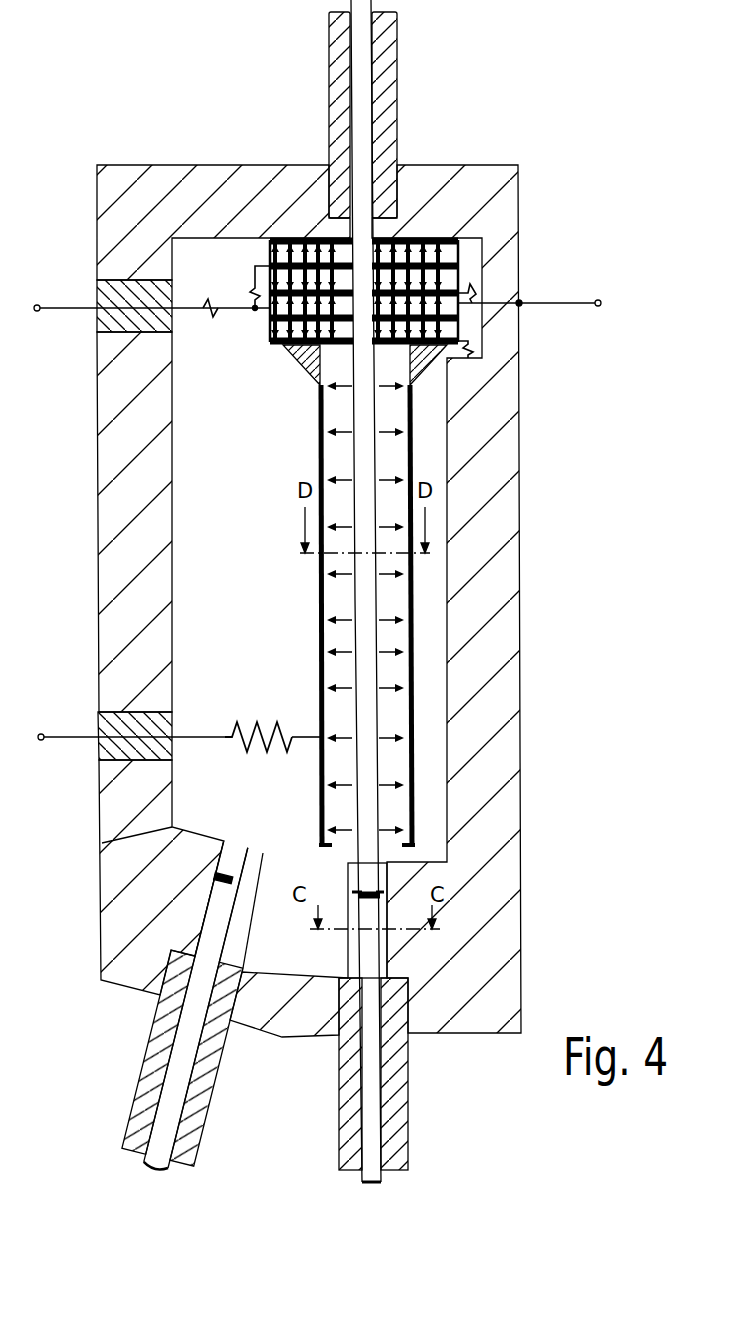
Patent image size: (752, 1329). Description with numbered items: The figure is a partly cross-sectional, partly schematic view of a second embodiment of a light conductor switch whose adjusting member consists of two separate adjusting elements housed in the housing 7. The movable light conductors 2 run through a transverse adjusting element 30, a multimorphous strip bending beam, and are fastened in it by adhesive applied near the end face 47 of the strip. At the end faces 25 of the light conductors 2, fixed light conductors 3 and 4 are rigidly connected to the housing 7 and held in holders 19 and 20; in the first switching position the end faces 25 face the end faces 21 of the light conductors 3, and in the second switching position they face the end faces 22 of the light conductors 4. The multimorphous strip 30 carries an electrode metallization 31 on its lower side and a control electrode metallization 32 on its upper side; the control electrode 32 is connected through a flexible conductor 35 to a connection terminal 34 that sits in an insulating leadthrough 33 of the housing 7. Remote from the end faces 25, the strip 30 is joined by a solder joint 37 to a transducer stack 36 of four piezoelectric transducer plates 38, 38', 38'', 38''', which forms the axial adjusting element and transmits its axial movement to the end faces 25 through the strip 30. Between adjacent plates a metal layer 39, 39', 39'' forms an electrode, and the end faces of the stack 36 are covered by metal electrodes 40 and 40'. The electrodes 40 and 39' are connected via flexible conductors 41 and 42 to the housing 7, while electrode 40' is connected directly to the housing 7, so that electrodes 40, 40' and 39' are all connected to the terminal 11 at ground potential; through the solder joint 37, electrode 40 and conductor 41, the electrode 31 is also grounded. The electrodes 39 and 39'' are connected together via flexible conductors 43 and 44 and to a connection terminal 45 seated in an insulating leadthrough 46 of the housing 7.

The light conductor 2 is at (363, 450).
The light conductor 3 is at (372, 1113).
The light conductor 4 is at (178, 1096).
The housing 7 is at (505, 565).
The terminal 11 is at (544, 306).
The holder 19 is at (354, 962).
The holder 20 is at (226, 940).
The end face 21 is at (356, 895).
The end face 22 is at (240, 880).
The end face 25 is at (378, 892).
The transverse adjusting element 30 is at (345, 637).
The electrode metallization 31 is at (412, 735).
The control electrode metallization 32 is at (326, 613).
The insulating leadthrough 33 is at (115, 750).
The connection terminal 34 is at (175, 723).
The flexible conductor 35 is at (252, 722).
The transducer stack 36 is at (278, 338).
The solder joint 37 is at (300, 370).
The piezoelectric transducer plate 38 is at (488, 334).
The piezoelectric transducer plate 38' is at (471, 298).
The piezoelectric transducer plate 38'' is at (474, 231).
The piezoelectric transducer plate 38''' is at (420, 186).
The metal layer 39 is at (469, 316).
The metal layer 39' is at (472, 261).
The metal layer 39'' is at (475, 194).
The metal electrode 40 is at (468, 313).
The metal electrode 40' is at (305, 236).
The flexible conductor 41 is at (475, 348).
The flexible conductor 42 is at (480, 290).
The flexible conductor 43 is at (252, 290).
The flexible conductor 44 is at (212, 318).
The connection terminal 45 is at (146, 292).
The insulating leadthrough 46 is at (97, 282).
The end face 47 is at (325, 848).